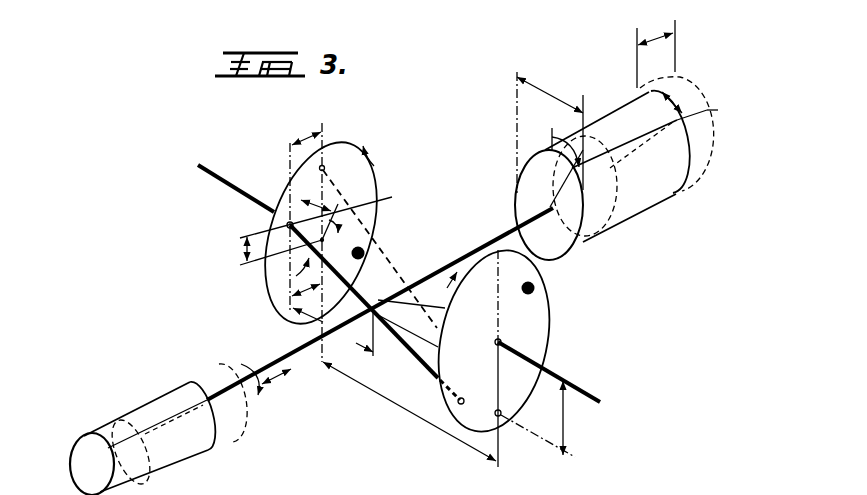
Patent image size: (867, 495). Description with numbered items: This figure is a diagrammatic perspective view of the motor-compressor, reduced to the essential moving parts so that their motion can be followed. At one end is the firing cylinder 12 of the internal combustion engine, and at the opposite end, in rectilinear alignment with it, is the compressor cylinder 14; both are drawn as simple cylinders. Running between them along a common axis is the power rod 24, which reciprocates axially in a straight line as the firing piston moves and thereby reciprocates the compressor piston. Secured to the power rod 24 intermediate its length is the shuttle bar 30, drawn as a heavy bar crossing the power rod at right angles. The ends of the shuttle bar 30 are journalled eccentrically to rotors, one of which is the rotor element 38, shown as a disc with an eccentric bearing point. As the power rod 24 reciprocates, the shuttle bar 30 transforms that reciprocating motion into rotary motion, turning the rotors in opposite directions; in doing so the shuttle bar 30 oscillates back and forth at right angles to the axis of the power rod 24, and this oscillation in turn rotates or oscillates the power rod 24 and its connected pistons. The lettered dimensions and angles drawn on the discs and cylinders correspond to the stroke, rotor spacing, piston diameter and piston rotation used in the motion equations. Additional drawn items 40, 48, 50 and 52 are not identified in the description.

The firing cylinder 12 is at (88, 432).
The compressor cylinder 14 is at (643, 217).
The power rod 24 is at (310, 352).
The shuttle bar 30 is at (404, 350).
The rotor element 38 is at (465, 431).
The first disk 40 is at (381, 174).
The crank arm 48 is at (235, 180).
The second disk 50 is at (548, 317).
The crank arm 52 is at (598, 393).